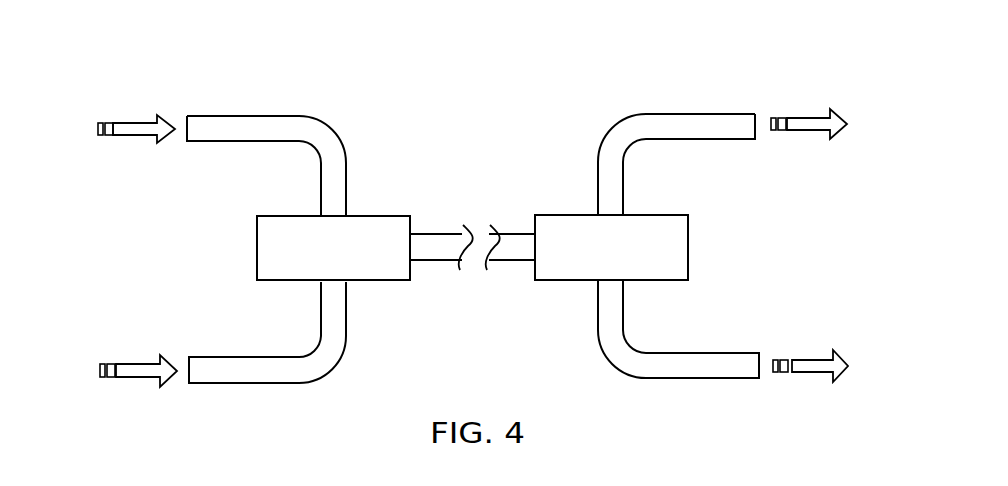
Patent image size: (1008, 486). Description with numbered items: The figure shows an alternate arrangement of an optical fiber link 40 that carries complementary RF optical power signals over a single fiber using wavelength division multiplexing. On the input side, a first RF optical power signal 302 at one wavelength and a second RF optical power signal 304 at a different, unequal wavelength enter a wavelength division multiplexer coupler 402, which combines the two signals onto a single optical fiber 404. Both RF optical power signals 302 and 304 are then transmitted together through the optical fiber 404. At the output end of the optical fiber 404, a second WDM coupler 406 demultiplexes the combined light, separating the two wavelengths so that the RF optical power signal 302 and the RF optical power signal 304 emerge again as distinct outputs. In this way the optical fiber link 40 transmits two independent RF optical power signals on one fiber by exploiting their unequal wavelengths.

The optical fiber link 40 is at (313, 73).
The RF optical power signal 302 is at (133, 118).
The RF optical power signal 304 is at (138, 379).
The wavelength division multiplexer coupler 402 is at (257, 250).
The optical fiber 404 is at (442, 234).
The WDM coupler 406 is at (688, 237).